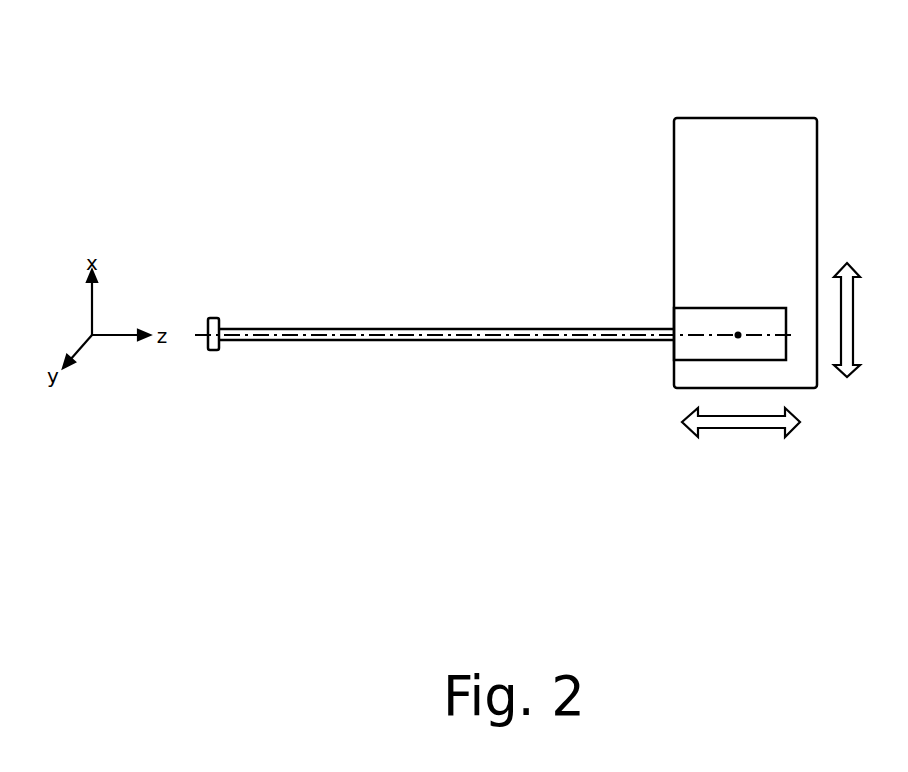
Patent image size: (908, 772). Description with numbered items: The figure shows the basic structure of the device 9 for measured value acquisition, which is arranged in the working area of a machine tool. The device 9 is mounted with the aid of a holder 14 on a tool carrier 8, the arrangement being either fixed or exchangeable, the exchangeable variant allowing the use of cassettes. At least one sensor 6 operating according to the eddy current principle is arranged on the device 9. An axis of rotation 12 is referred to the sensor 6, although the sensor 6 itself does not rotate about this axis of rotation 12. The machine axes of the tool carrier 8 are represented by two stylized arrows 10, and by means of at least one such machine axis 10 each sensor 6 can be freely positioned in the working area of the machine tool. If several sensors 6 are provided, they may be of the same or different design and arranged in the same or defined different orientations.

The sensor 6 is at (215, 318).
The tool carrier 8 is at (695, 132).
The device 9 is at (606, 329).
The machine axes 10 is at (771, 415).
The axis of rotation 12 is at (738, 334).
The holder 14 is at (706, 318).